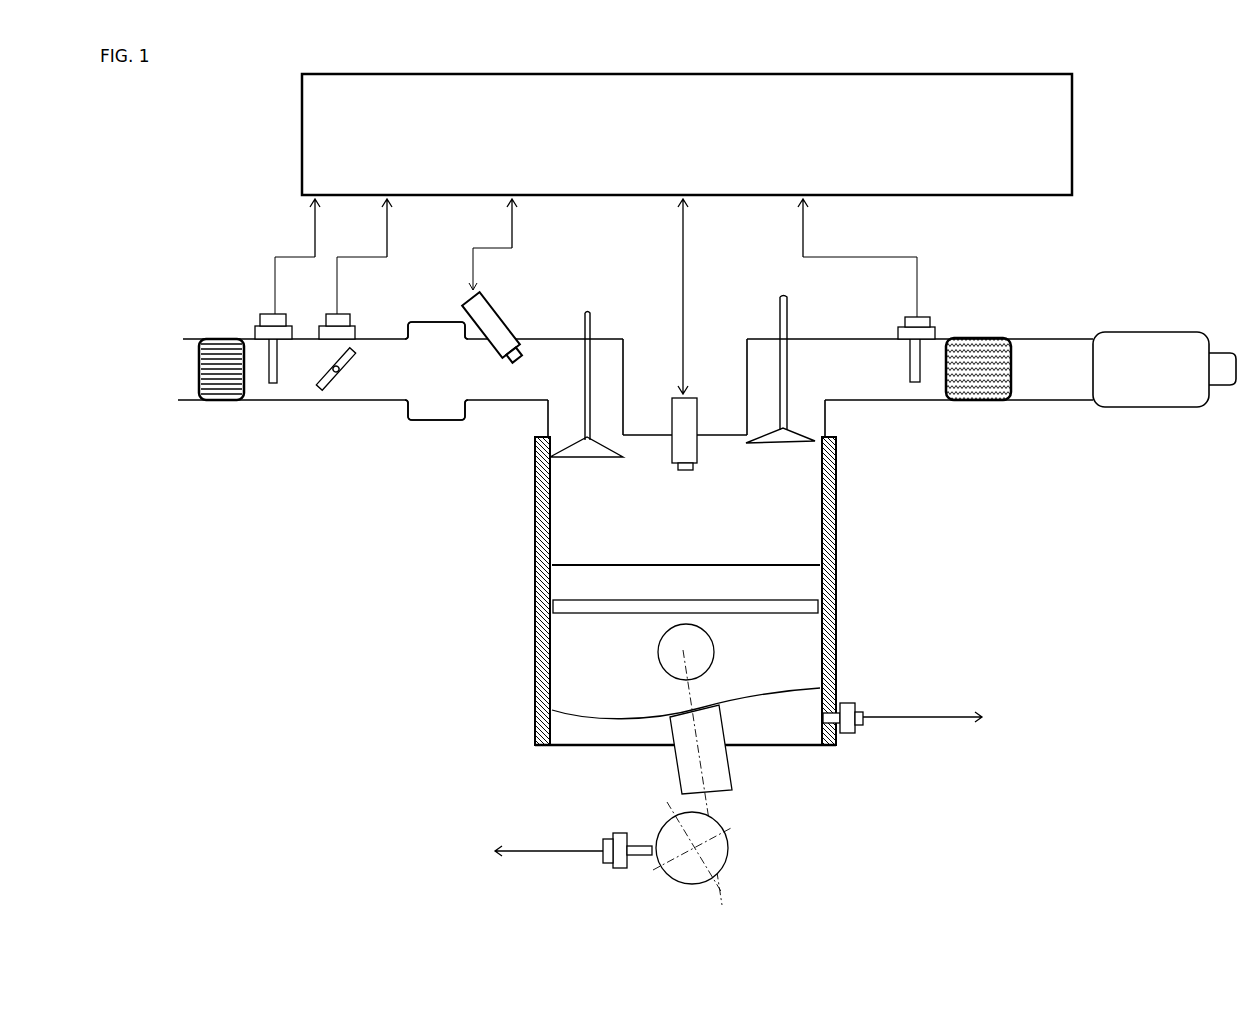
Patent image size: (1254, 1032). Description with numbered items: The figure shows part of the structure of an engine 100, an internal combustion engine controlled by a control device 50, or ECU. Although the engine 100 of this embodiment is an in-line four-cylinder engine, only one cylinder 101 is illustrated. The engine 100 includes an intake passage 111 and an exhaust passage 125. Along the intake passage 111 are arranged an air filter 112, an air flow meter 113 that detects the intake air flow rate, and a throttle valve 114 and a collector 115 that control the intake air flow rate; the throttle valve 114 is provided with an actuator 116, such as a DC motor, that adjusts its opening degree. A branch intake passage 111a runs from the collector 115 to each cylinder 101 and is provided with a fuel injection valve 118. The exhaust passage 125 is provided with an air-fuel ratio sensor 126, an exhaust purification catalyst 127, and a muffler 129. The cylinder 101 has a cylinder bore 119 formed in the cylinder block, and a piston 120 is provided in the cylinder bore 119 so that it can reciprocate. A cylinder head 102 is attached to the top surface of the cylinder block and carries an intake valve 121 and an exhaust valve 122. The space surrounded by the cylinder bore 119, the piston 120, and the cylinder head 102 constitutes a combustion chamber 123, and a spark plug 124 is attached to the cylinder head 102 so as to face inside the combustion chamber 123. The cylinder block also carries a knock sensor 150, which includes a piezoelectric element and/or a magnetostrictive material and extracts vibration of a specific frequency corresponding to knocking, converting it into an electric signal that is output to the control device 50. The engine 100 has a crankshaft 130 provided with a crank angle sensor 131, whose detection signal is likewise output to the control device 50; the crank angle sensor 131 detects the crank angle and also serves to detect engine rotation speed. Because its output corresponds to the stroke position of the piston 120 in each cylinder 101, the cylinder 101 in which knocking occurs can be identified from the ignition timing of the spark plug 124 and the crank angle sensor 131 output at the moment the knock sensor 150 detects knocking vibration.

The control device 50 is at (687, 469).
The engine 100 is at (1060, 292).
The cylinder 101 is at (837, 590).
The cylinder head 102 is at (637, 433).
The intake passage 111 is at (258, 490).
The intake passage 111a is at (575, 340).
The air filter 112 is at (223, 382).
The air flow meter 113 is at (275, 384).
The throttle valve 114 is at (332, 388).
The collector 115 is at (435, 404).
The actuator 116 is at (333, 327).
The fuel injection valve 118 is at (507, 315).
The cylinder bore 119 is at (822, 542).
The piston 120 is at (563, 647).
The intake valve 121 is at (552, 458).
The exhaust valve 122 is at (788, 443).
The combustion chamber 123 is at (704, 532).
The spark plug 124 is at (687, 413).
The exhaust passage 125 is at (1022, 484).
The air-fuel ratio sensor 126 is at (920, 328).
The exhaust purification catalyst 127 is at (983, 395).
The muffler 129 is at (1140, 392).
The crankshaft 130 is at (730, 847).
The crank angle sensor 131 is at (615, 867).
The knock sensor 150 is at (852, 733).